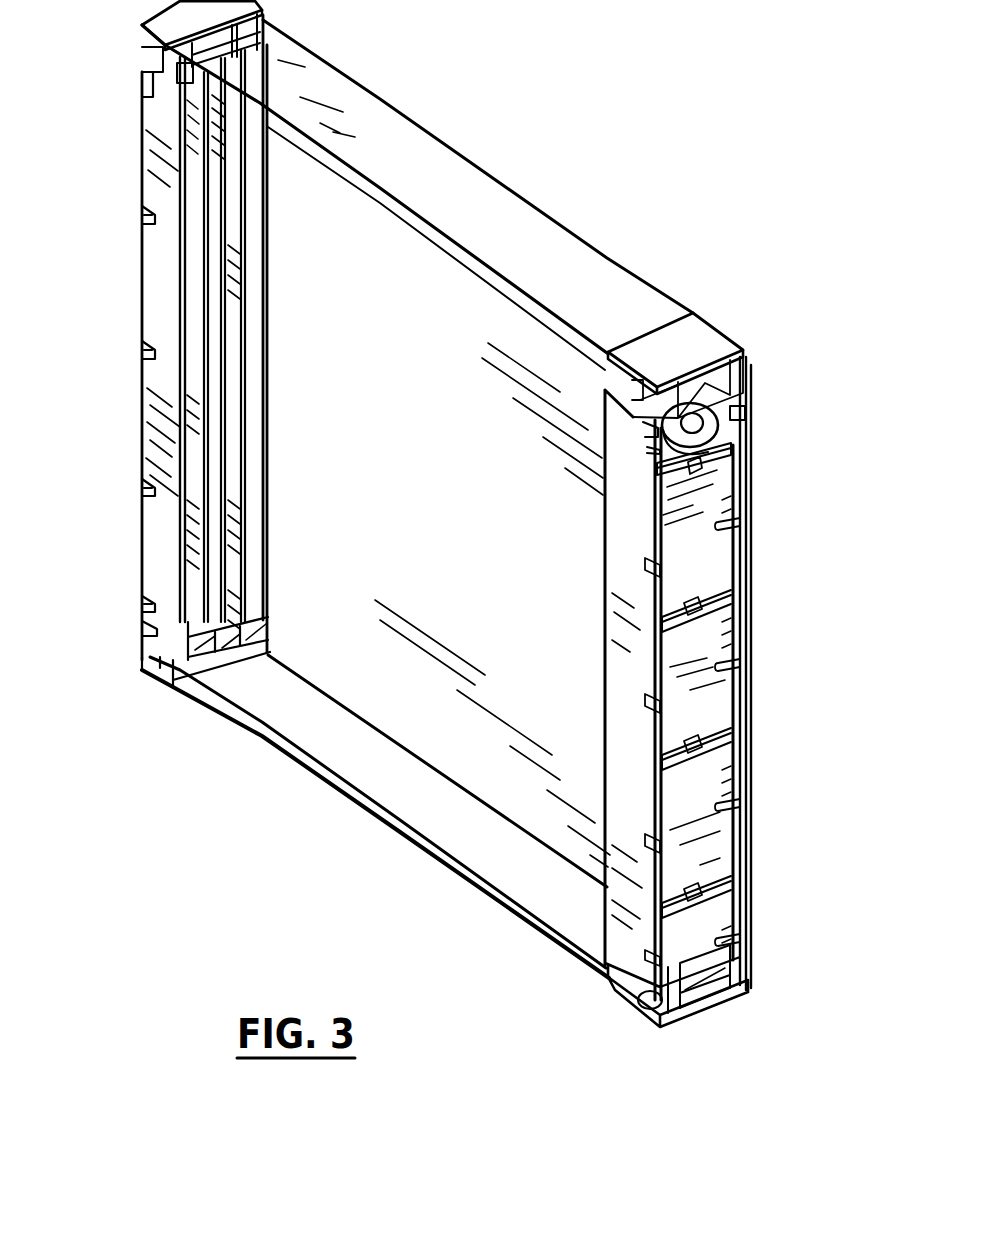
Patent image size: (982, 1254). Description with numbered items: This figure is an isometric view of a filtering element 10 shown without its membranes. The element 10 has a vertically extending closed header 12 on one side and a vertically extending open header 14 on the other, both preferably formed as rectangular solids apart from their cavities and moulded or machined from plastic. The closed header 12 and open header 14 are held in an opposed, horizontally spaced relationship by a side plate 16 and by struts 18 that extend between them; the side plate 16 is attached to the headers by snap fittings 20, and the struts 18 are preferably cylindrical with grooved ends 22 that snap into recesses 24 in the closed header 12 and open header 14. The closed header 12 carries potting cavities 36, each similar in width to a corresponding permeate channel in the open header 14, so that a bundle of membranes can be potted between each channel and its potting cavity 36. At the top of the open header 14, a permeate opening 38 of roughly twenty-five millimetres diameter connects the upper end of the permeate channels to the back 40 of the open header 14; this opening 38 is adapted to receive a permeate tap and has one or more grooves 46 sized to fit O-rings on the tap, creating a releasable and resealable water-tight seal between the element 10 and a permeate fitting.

The filtering element 10 is at (672, 106).
The closed header 12 is at (152, 157).
The open header 14 is at (708, 575).
The side plate 16 is at (470, 757).
The strut 18 is at (559, 318).
The snap fitting 20 is at (765, 669).
The grooved end 22 is at (406, 880).
The recess 24 is at (153, 684).
The potting cavity 36 is at (236, 322).
The permeate opening 38 is at (713, 432).
The back of the open header 40 is at (748, 722).
The groove 46 is at (738, 415).